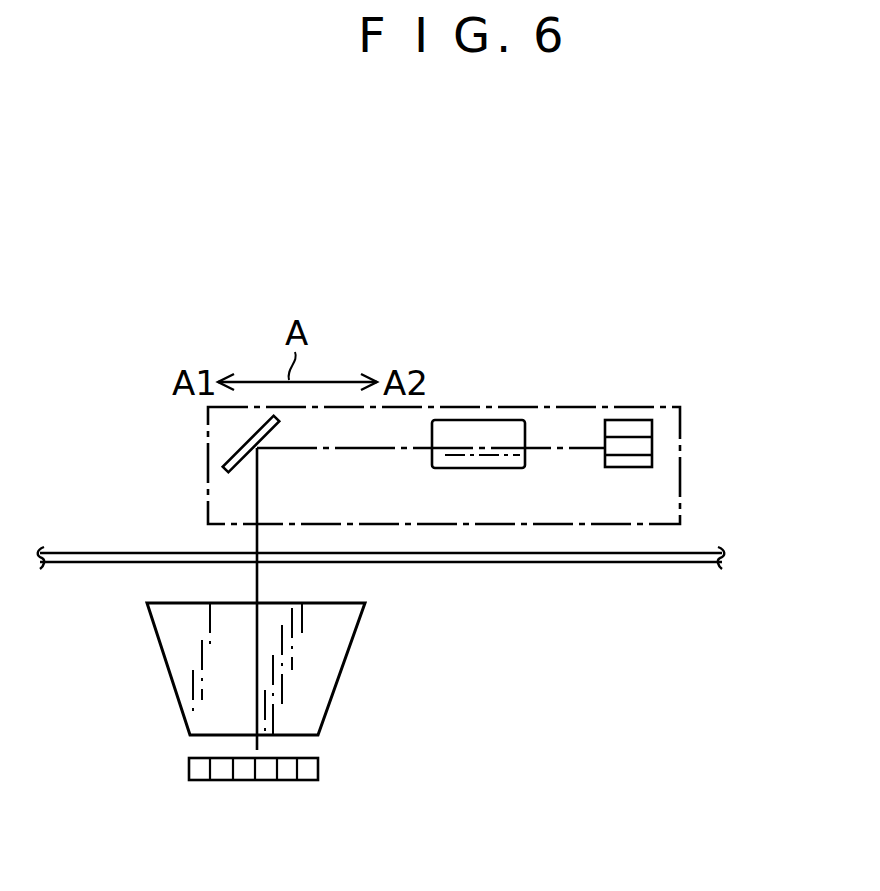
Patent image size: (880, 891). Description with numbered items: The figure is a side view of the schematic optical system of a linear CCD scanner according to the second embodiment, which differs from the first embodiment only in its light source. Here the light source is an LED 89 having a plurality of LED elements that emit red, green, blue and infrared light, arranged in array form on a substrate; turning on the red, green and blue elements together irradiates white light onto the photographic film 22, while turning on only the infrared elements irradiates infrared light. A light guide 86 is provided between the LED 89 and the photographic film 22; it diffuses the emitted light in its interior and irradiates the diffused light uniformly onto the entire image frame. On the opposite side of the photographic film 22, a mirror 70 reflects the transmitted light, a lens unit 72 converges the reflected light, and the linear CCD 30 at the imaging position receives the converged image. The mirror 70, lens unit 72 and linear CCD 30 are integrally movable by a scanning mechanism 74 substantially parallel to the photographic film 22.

The photographic film 22 is at (538, 564).
The linear CCD 30 is at (628, 425).
The mirror 70 is at (240, 448).
The lens unit 72 is at (478, 432).
The scanning mechanism 74 is at (557, 398).
The light guide 86 is at (322, 676).
The LED 89 is at (258, 783).